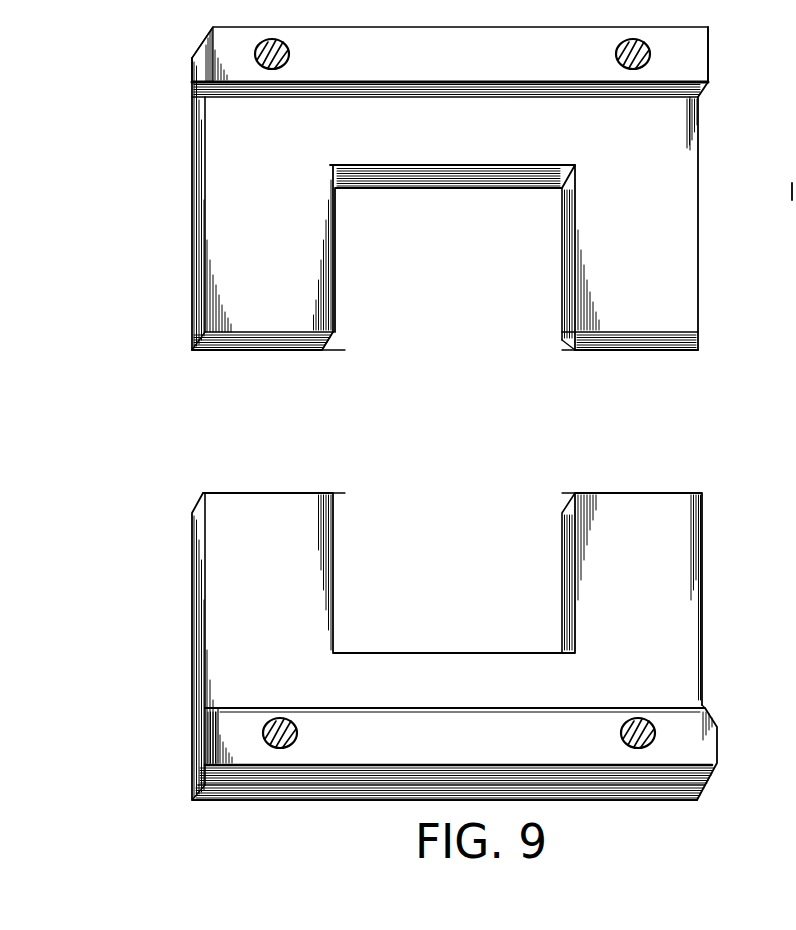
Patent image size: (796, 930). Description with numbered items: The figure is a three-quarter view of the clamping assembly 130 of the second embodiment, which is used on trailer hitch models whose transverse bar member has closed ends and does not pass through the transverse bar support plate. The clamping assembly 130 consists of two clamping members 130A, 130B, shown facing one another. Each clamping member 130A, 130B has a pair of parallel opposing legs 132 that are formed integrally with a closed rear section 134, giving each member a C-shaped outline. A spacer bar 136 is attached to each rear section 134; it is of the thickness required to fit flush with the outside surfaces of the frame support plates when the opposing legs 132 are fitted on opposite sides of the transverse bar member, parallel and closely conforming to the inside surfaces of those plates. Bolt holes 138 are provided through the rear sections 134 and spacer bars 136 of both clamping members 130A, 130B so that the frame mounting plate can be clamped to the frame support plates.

The clamping assembly 130 is at (446, 413).
The clamping member 130A is at (405, 325).
The clamping member 130B is at (192, 612).
The parallel opposing legs 132 is at (570, 488).
The closed rear section 134 is at (433, 183).
The spacer bar 136 is at (708, 80).
The bolt holes 138 is at (615, 53).